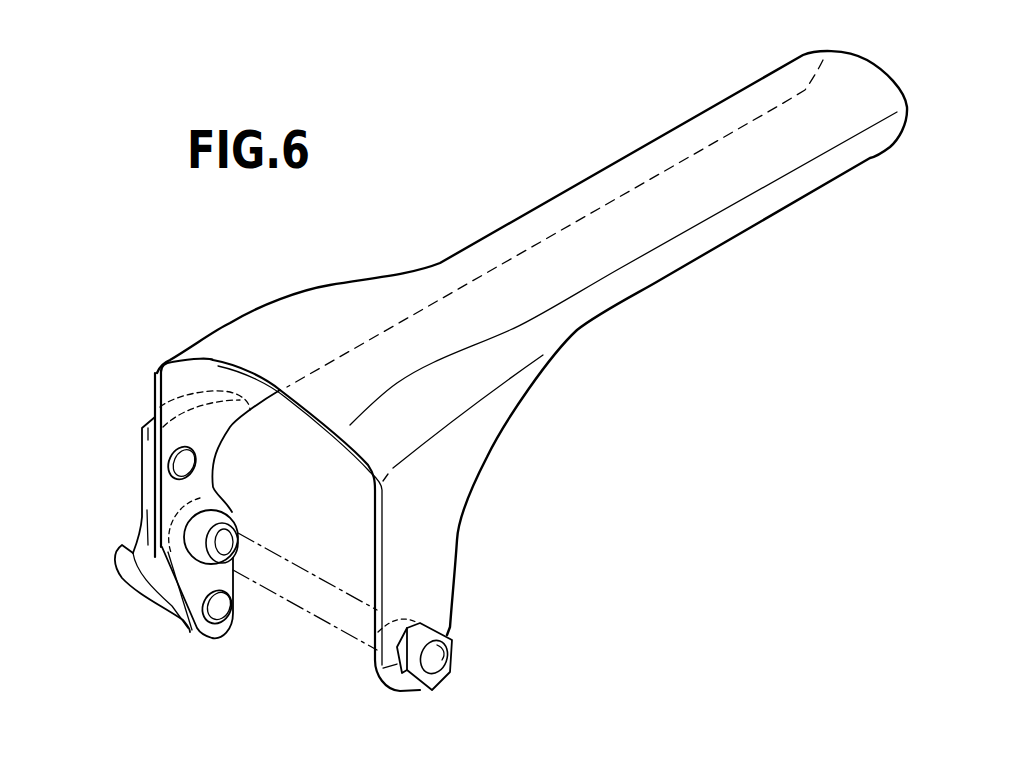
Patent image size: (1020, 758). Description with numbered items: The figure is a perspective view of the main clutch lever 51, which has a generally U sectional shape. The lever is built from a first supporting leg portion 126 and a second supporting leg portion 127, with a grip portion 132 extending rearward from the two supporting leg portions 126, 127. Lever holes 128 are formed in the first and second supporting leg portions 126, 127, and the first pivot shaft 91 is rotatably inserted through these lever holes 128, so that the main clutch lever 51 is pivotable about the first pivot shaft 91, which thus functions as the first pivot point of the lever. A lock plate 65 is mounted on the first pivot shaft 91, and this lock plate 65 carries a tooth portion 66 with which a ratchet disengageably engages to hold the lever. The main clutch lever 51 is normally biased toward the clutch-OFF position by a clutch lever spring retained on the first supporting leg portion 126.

The main clutch lever 51 is at (436, 262).
The grip portion 132 is at (628, 153).
The first supporting leg portion 126 is at (455, 572).
The lock plate 65 is at (148, 450).
The second supporting leg portion 127 is at (172, 475).
The tooth portion 66 is at (123, 547).
The lever holes 128 is at (237, 540).
The first pivot shaft 91 is at (310, 617).